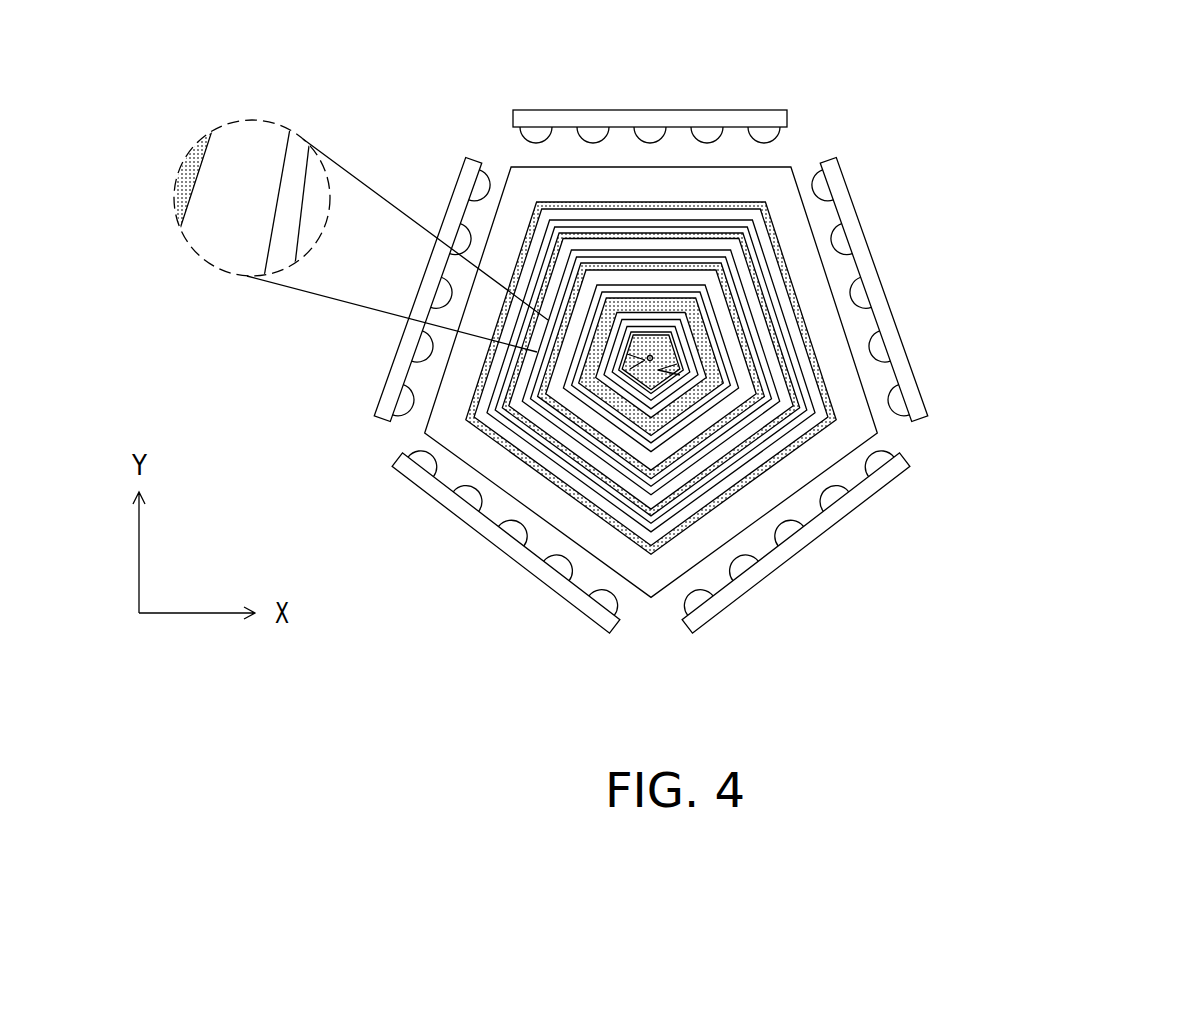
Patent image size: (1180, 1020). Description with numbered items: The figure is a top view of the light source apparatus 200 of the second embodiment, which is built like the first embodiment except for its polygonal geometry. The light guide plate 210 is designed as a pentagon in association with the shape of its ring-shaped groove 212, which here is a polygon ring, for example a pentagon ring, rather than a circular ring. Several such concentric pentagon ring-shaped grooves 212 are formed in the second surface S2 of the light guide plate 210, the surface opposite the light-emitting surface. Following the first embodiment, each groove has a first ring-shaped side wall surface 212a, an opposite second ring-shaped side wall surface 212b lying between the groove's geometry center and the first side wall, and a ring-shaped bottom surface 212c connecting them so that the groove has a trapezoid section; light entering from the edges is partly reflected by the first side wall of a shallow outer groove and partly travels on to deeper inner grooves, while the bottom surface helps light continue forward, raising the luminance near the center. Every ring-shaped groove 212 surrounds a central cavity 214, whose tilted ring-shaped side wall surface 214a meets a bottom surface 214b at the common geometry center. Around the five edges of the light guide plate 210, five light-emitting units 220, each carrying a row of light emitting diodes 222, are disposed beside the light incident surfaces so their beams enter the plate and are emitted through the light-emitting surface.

The light source apparatus 200 is at (1170, 703).
The light guide plate 210 is at (853, 427).
The ring-shaped groove 212 is at (727, 337).
The first ring-shaped side wall surface 212a is at (229, 125).
The second ring-shaped side wall surface 212b is at (325, 153).
The ring-shaped bottom surface 212c is at (279, 130).
The cavity 214 is at (656, 357).
The ring-shaped side wall surface of the cavity 214a is at (680, 370).
The bottom surface of the cavity 214b is at (645, 360).
The light-emitting unit 220 is at (680, 353).
The light emitting diode 222 is at (480, 160).
The second surface S2 is at (437, 429).